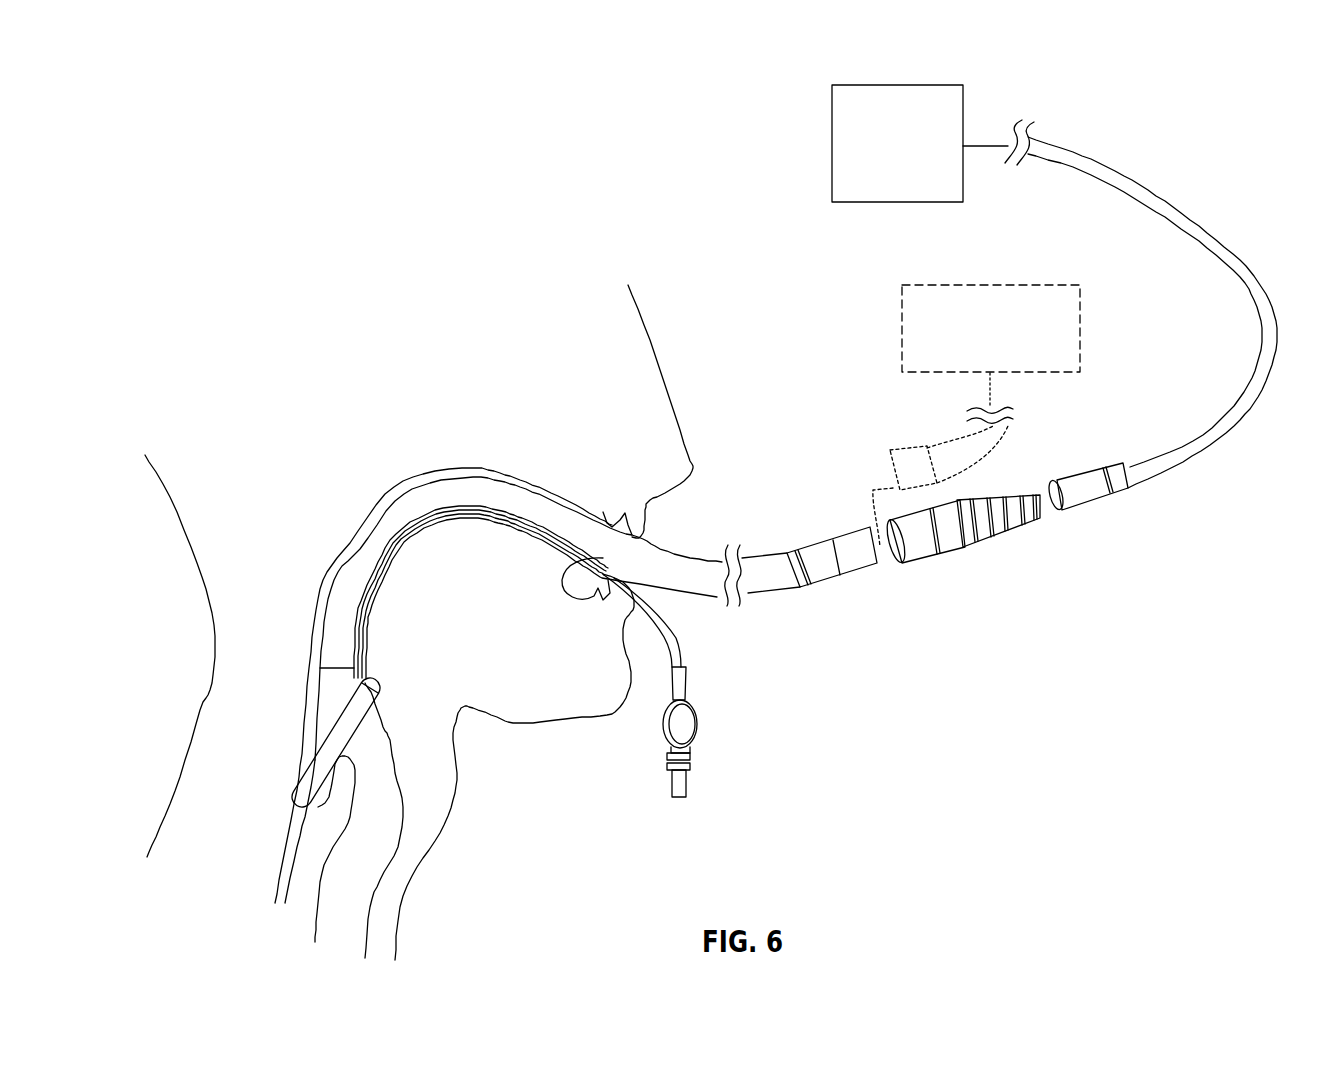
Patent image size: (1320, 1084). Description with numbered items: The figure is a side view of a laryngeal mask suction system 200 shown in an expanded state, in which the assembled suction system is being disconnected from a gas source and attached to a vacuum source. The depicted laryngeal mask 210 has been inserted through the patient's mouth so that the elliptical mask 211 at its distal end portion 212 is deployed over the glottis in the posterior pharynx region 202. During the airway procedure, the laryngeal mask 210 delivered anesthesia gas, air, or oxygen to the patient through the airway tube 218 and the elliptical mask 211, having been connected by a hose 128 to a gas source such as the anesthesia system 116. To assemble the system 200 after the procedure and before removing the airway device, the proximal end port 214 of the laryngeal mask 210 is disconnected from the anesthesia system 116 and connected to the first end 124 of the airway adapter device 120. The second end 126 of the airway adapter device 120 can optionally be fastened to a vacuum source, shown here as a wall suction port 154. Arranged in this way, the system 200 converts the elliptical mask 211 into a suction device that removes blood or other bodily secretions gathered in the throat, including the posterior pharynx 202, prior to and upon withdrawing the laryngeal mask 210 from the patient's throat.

The system 200 is at (1123, 70).
The wall suction port 154 is at (912, 164).
The anesthesia system 116 is at (1006, 346).
The hose 128 is at (910, 452).
The first end 124 is at (890, 553).
The airway adapter device 120 is at (972, 543).
The second end 126 is at (1040, 507).
The proximal end port 214 is at (857, 557).
The airway tube 218 is at (717, 598).
The laryngeal mask 210 is at (358, 573).
The distal end portion 212 is at (330, 692).
The elliptical mask 211 is at (338, 730).
The posterior pharynx region 202 is at (298, 773).